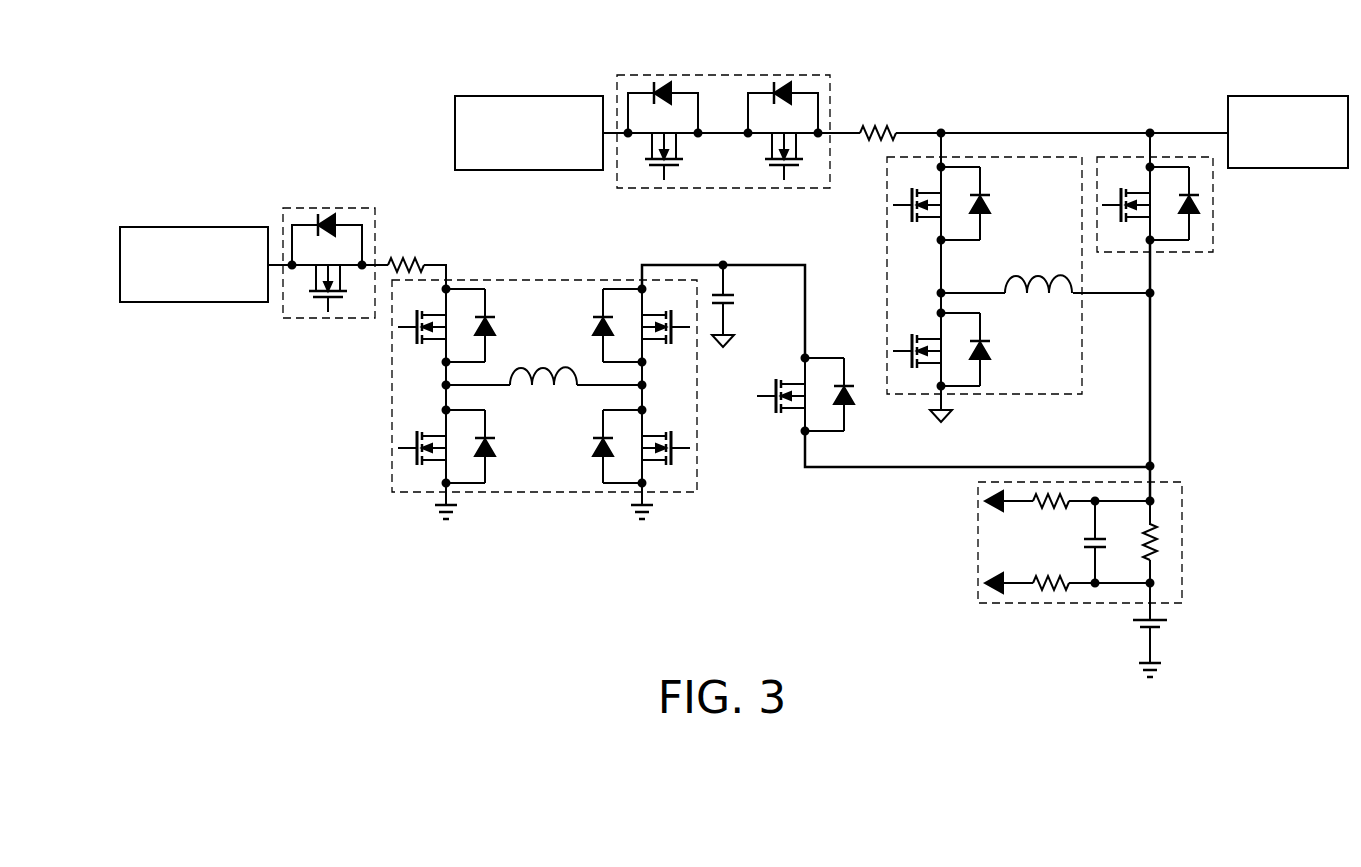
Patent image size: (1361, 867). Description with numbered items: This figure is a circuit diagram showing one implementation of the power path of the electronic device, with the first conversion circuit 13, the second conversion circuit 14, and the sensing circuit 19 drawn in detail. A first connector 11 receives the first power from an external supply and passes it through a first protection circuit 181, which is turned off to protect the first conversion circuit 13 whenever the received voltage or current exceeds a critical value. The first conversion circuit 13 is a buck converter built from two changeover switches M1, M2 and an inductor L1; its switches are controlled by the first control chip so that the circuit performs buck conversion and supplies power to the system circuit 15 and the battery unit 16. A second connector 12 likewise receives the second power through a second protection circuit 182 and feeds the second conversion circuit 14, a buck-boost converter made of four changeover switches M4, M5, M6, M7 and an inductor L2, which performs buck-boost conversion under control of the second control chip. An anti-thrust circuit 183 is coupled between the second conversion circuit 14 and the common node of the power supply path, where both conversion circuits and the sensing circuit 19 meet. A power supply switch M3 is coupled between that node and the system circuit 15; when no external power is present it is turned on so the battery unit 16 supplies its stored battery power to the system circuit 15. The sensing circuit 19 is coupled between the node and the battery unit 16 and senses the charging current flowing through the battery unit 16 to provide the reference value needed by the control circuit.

The first connector 11 is at (527, 95).
The second connector 12 is at (192, 227).
The first conversion circuit 13 is at (952, 275).
The second conversion circuit 14 is at (543, 358).
The system circuit 15 is at (1286, 95).
The battery unit 16 is at (1140, 628).
The sensing circuit 19 is at (978, 542).
The first protection circuit 181 is at (611, 83).
The second protection circuit 182 is at (281, 222).
The anti-thrust circuit 183 is at (795, 408).
The changeover switch M1 is at (921, 221).
The changeover switch M2 is at (919, 336).
The power supply switch M3 is at (1213, 237).
The changeover switch M4 is at (430, 340).
The changeover switch M5 is at (430, 430).
The changeover switch M6 is at (662, 343).
The changeover switch M7 is at (662, 434).
The inductor L1 is at (1005, 268).
The inductor L2 is at (527, 363).